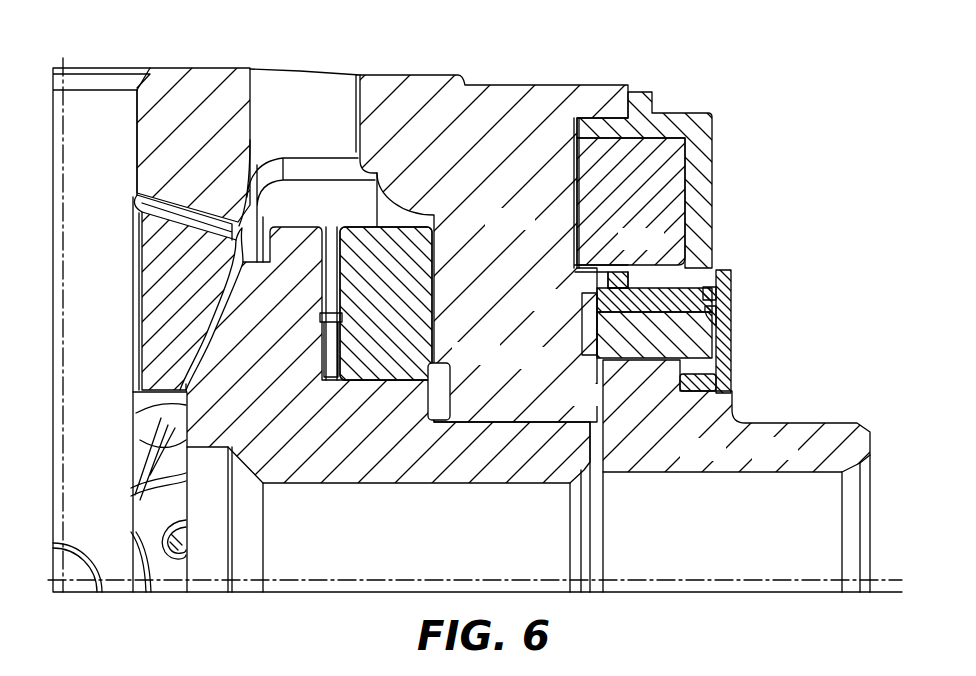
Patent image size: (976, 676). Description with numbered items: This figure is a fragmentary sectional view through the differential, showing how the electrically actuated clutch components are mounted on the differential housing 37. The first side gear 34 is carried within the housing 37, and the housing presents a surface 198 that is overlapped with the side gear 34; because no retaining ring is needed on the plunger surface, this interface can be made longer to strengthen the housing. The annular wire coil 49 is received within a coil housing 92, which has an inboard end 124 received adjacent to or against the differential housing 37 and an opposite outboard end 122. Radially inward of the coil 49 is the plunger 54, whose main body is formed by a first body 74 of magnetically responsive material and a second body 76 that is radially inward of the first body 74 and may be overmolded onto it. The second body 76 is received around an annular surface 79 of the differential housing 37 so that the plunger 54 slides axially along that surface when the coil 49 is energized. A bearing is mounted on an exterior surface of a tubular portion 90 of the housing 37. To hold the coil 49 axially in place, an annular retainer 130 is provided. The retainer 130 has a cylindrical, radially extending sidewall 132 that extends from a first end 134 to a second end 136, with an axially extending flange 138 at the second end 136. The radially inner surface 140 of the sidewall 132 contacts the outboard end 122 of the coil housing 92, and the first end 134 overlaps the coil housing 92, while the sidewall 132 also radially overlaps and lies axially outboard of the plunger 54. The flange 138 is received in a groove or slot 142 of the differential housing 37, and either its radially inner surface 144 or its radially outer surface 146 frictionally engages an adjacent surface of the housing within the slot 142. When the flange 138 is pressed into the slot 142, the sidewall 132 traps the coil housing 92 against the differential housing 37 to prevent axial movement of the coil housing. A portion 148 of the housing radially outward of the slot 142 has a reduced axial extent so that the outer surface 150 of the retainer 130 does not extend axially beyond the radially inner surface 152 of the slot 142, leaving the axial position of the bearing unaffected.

The housing 37 is at (391, 96).
The first side gear 34 is at (425, 460).
The coil housing 92 is at (698, 122).
The annular wire coil 49 is at (667, 168).
The outboard end 122 is at (713, 193).
The inboard end 124 is at (577, 203).
The radially outer surface 146 is at (702, 382).
The first end 134 is at (718, 275).
The radially inner surface 140 is at (718, 303).
The outer surface 150 is at (733, 330).
The retainer 130 is at (731, 343).
The sidewall 132 is at (731, 353).
The portion 148 is at (731, 367).
The second end 136 is at (731, 384).
The radially inner surface 152 is at (731, 393).
The tubular portion 90 is at (862, 421).
The first body 74 is at (605, 298).
The plunger 54 is at (582, 340).
The surface 79 is at (604, 356).
The second body 76 is at (646, 338).
The surface 198 is at (497, 435).
The flange 138 is at (693, 393).
The radially inner surface 144 is at (720, 400).
The slot 142 is at (677, 396).